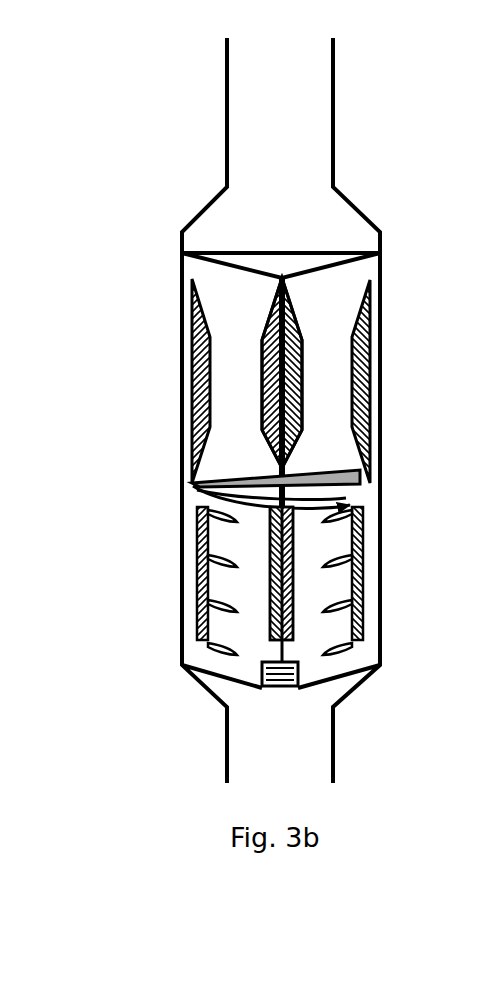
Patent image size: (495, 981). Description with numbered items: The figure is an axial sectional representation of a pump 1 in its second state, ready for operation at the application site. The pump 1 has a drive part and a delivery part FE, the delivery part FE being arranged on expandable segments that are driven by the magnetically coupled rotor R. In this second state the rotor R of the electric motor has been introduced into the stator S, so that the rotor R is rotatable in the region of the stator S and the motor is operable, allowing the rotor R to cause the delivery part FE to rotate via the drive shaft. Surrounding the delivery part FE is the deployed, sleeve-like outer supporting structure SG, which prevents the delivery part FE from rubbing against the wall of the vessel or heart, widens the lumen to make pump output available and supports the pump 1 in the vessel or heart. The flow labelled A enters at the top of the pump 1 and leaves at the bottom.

The pump 1 is at (369, 78).
The air / gas flow A is at (280, 262).
The rotor R is at (267, 315).
The supporting structure SG is at (180, 540).
The delivery part FE is at (192, 585).
The stator S is at (371, 472).